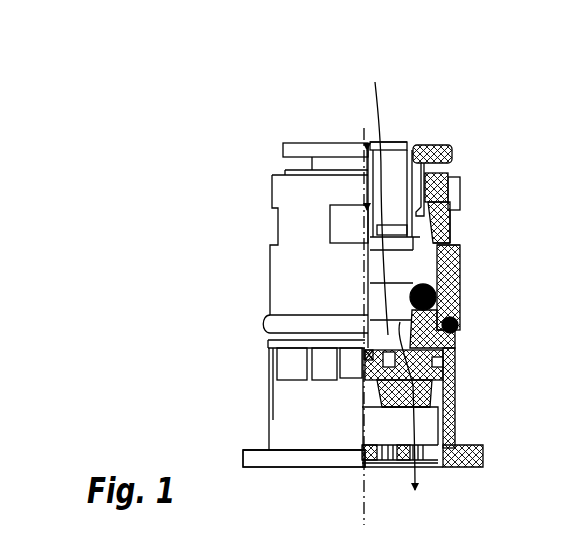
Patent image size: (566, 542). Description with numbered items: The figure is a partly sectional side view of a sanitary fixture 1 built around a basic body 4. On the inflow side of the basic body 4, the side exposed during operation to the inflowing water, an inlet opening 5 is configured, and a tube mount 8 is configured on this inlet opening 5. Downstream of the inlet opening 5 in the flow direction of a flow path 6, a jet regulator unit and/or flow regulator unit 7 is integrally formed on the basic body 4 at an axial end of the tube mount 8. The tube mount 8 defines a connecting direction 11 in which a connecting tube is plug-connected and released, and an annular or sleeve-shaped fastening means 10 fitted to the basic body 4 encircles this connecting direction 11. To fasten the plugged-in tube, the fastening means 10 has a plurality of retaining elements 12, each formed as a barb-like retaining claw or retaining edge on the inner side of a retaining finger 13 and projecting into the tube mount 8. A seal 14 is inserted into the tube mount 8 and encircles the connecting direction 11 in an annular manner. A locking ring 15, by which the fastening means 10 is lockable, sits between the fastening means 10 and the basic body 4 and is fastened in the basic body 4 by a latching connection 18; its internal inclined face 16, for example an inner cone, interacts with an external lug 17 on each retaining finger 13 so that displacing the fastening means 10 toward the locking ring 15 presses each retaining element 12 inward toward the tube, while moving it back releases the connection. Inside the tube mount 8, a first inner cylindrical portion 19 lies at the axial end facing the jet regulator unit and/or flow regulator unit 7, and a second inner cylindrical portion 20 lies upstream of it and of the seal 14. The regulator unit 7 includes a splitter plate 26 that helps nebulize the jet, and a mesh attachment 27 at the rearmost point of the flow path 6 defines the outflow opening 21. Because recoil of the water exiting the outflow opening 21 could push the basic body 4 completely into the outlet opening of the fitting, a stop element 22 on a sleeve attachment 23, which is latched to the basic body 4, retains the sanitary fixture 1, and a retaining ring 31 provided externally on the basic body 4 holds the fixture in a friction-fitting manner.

The sanitary fixture 1 is at (136, 166).
The basic body 4 is at (282, 287).
The inlet opening 5 is at (399, 130).
The flow path 6 is at (370, 106).
The jet regulator unit and/or flow regulator unit 7 is at (425, 352).
The tube mount 8 is at (398, 211).
The fastening means 10 is at (327, 147).
The connecting direction 11 is at (362, 183).
The retaining elements 12 is at (452, 146).
The retaining finger 13 is at (368, 240).
The seal 14 is at (372, 290).
The locking ring 15 is at (453, 168).
The inclined face 16 is at (452, 205).
The external lug 17 is at (453, 209).
The latching connection 18 is at (460, 204).
The first inner cylindrical portion 19 is at (388, 335).
The second inner cylindrical portion 20 is at (460, 247).
The outflow opening 21 is at (316, 478).
The stop element 22 is at (255, 462).
The sleeve attachment 23 is at (278, 405).
The splitter plate 26 is at (365, 360).
The mesh attachment 27 is at (457, 437).
The retaining ring 31 is at (466, 315).